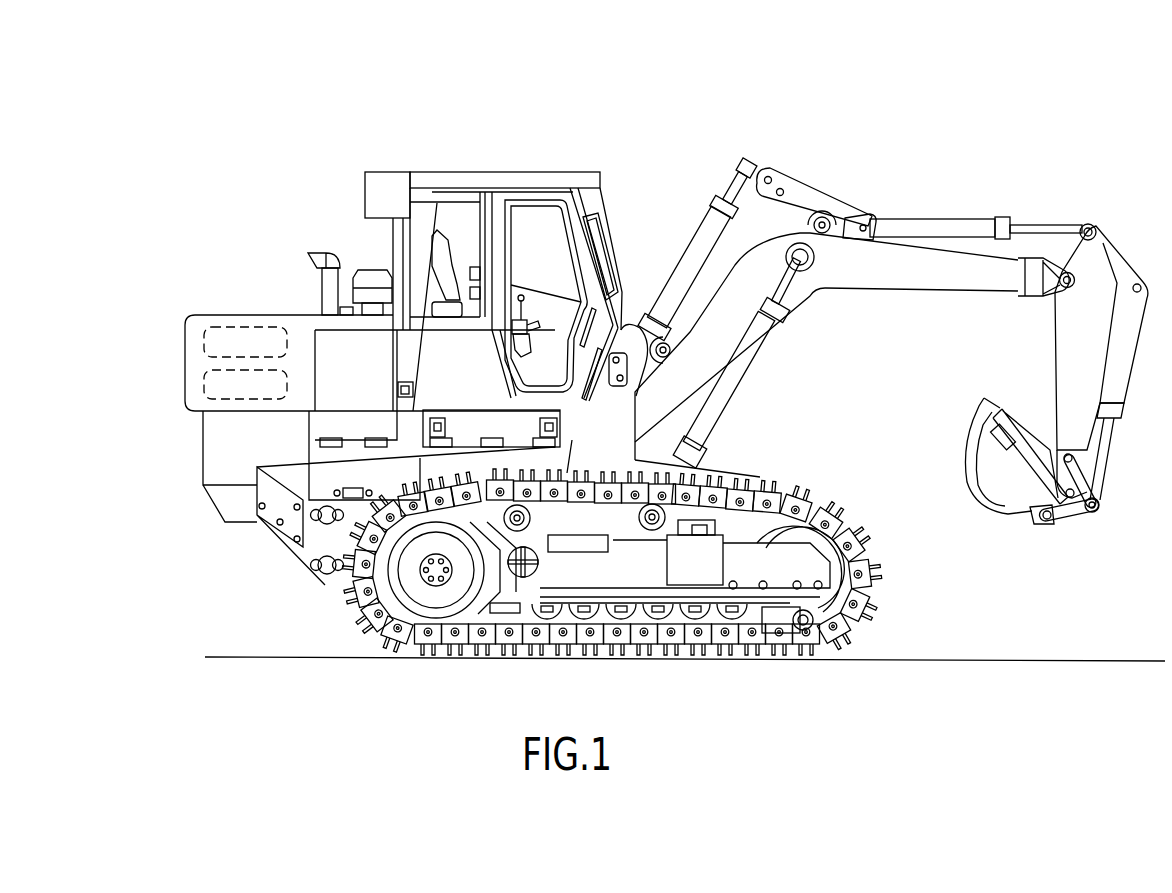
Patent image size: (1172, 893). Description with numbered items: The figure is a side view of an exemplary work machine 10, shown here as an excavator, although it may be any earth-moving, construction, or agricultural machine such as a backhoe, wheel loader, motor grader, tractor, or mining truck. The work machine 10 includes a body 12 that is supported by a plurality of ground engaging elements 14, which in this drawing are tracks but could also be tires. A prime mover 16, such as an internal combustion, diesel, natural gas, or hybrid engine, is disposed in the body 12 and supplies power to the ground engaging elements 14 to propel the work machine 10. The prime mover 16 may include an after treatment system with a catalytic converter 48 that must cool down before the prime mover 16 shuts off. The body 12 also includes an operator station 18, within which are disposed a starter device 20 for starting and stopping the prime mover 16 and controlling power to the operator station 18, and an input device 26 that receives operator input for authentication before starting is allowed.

The work machine 10 is at (864, 68).
The body 12 is at (333, 348).
The ground engaging elements 14 is at (425, 637).
The prime mover 16 is at (223, 388).
The operator station 18 is at (502, 188).
The starter device 20 is at (479, 273).
The input device 26 is at (479, 293).
The catalytic converter 48 is at (240, 335).